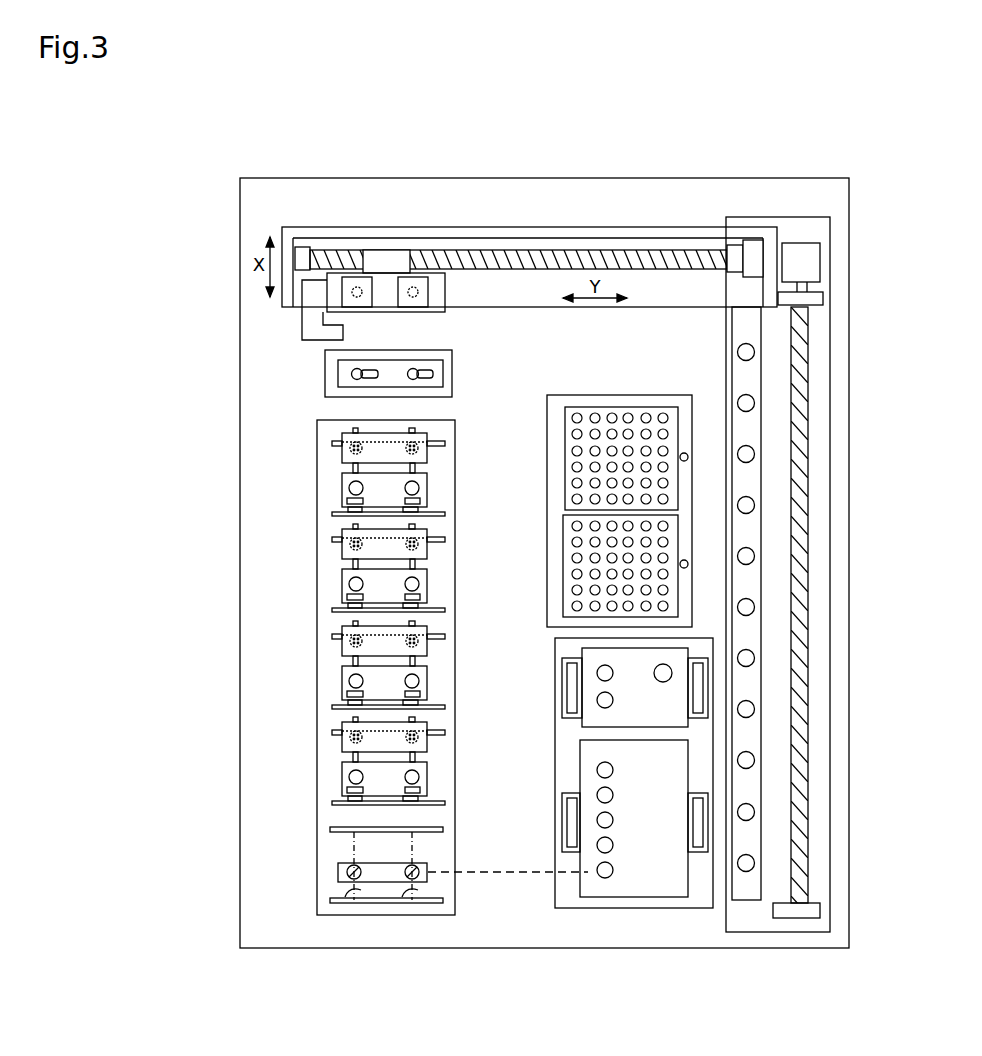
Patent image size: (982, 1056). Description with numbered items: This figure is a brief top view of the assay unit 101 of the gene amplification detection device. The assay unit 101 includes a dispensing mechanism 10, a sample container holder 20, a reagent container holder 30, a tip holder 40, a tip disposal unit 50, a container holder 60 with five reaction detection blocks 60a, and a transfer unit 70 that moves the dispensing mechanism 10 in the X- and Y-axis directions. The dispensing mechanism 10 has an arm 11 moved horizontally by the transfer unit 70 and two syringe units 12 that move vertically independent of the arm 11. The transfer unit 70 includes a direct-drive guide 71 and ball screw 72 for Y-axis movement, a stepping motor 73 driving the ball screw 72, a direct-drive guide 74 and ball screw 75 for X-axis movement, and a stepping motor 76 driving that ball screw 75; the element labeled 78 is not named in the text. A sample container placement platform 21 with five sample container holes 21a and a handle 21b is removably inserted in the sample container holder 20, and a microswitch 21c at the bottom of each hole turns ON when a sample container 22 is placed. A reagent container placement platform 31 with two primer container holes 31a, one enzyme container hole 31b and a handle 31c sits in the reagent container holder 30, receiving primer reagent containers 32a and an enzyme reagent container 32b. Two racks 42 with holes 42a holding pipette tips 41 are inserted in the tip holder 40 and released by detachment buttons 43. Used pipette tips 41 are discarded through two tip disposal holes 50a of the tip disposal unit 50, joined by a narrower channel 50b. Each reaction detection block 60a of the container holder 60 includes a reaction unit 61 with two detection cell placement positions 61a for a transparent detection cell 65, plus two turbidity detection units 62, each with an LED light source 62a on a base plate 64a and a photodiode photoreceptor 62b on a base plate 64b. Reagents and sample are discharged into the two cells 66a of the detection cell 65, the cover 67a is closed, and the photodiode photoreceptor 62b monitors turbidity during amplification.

The assay unit 101 is at (586, 178).
The dispensing mechanism 10 is at (388, 263).
The arm 11 is at (447, 292).
The syringe unit 12 is at (355, 287).
The sample container holder 20 is at (702, 879).
The sample container placement platform 21 is at (688, 778).
The sample container hole 21a is at (596, 781).
The handle 21b is at (562, 818).
The microswitch 21c is at (606, 878).
The sample container 22 is at (597, 770).
The reagent container holder 30 is at (702, 690).
The reagent container placement platform 31 is at (708, 672).
The primer container hole 31a is at (582, 715).
The enzyme container hole 31b is at (605, 673).
The handle 31c is at (562, 680).
The primer reagent container 32a is at (605, 703).
The enzyme reagent container 32b is at (582, 676).
The tip holder 40 is at (692, 592).
The pipette tip 41 is at (665, 416).
The rack 42 is at (678, 443).
The hole 42a is at (678, 420).
The detachment button 43 is at (688, 457).
The tip disposal unit 50 is at (452, 385).
The tip disposal hole 50a is at (413, 369).
The channel 50b is at (369, 371).
The container holder 60 is at (315, 908).
The reaction detection block 60a is at (332, 463).
The reaction unit 61 is at (332, 915).
The detection cell placement position 61a is at (372, 882).
The turbidity detection unit 62 is at (403, 937).
The LED light source 62a is at (344, 895).
The photodiode photoreceptor 62b is at (356, 833).
The base plate 64a is at (335, 900).
The base plate 64b is at (332, 827).
The detection cell 65 is at (338, 490).
The cell 66a is at (416, 491).
The cover 67a is at (360, 452).
The transfer unit 70 is at (795, 205).
The direct-drive guide 71 is at (652, 240).
The ball screw 72 is at (620, 258).
The stepping motor 73 is at (757, 252).
The direct-drive guide 74 is at (748, 328).
The ball screw 75 is at (803, 347).
The stepping motor 76 is at (812, 263).
The drive frame 78 is at (812, 228).